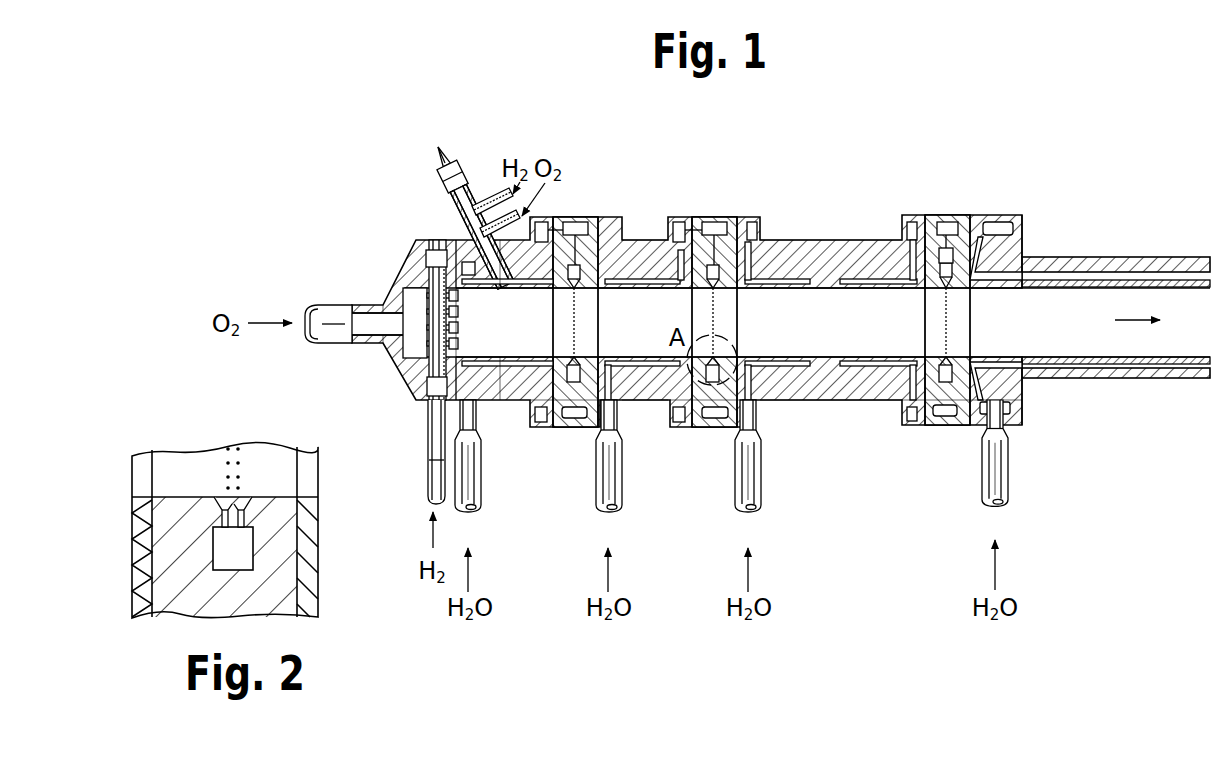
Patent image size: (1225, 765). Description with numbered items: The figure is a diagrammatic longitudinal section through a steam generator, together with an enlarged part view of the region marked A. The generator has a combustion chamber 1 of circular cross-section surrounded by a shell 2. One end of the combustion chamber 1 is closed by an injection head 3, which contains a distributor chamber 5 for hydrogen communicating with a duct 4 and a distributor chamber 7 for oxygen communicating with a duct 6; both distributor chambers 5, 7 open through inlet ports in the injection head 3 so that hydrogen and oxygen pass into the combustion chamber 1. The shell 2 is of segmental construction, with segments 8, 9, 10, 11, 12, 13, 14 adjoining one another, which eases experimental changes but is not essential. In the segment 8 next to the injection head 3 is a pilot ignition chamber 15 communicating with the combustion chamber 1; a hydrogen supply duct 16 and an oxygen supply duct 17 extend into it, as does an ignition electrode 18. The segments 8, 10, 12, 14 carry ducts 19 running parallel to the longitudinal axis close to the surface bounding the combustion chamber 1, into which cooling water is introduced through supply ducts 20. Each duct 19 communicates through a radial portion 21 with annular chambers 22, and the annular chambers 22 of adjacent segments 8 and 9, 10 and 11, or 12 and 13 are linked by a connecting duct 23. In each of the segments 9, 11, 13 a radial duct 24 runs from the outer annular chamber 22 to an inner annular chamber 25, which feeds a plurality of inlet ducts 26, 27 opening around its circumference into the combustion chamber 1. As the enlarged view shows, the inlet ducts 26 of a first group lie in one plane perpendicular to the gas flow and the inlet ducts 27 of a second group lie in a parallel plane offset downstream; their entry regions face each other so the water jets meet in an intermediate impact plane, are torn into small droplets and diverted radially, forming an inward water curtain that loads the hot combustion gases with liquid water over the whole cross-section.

In FIG. 1, the combustion chamber 1 is at (835, 300).
In FIG. 2, the combustion chamber 1 is at (280, 463).
In FIG. 1, the shell 2 is at (791, 225).
In FIG. 2, the shell 2 is at (322, 558).
In FIG. 1, the injection head 3 is at (385, 258).
In FIG. 1, the duct 4 is at (427, 487).
In FIG. 1, the distributor chamber for hydrogen 5 is at (422, 388).
In FIG. 1, the duct 6 is at (326, 308).
In FIG. 1, the distributor chamber for oxygen 7 is at (412, 292).
In FIG. 1, the segment 8 is at (510, 392).
In FIG. 1, the segment 9 is at (573, 422).
In FIG. 1, the segment 10 is at (647, 393).
In FIG. 2, the segment 10 is at (135, 573).
In FIG. 1, the segment 11 is at (716, 421).
In FIG. 2, the segment 11 is at (178, 590).
In FIG. 1, the segment 12 is at (843, 390).
In FIG. 2, the segment 12 is at (310, 580).
In FIG. 1, the segment 13 is at (945, 423).
In FIG. 1, the segment 14 is at (1103, 380).
In FIG. 1, the pilot ignition chamber 15 is at (478, 196).
In FIG. 1, the hydrogen supply duct 16 is at (505, 190).
In FIG. 1, the oxygen supply duct 17 is at (527, 213).
In FIG. 1, the ignition electrode 18 is at (453, 148).
In FIG. 1, the ducts 19 is at (527, 288).
In FIG. 1, the supply ducts 20 is at (600, 508).
In FIG. 1, the radial portion 21 is at (892, 238).
In FIG. 1, the annular chambers 22 is at (545, 222).
In FIG. 1, the connecting duct 23 is at (928, 225).
In FIG. 1, the radial duct 24 is at (718, 266).
In FIG. 1, the inner annular chamber 25 is at (940, 258).
In FIG. 2, the inner annular chamber 25 is at (242, 550).
In FIG. 2, the inlet ducts 26 is at (208, 508).
In FIG. 2, the inlet ducts 27 is at (254, 505).